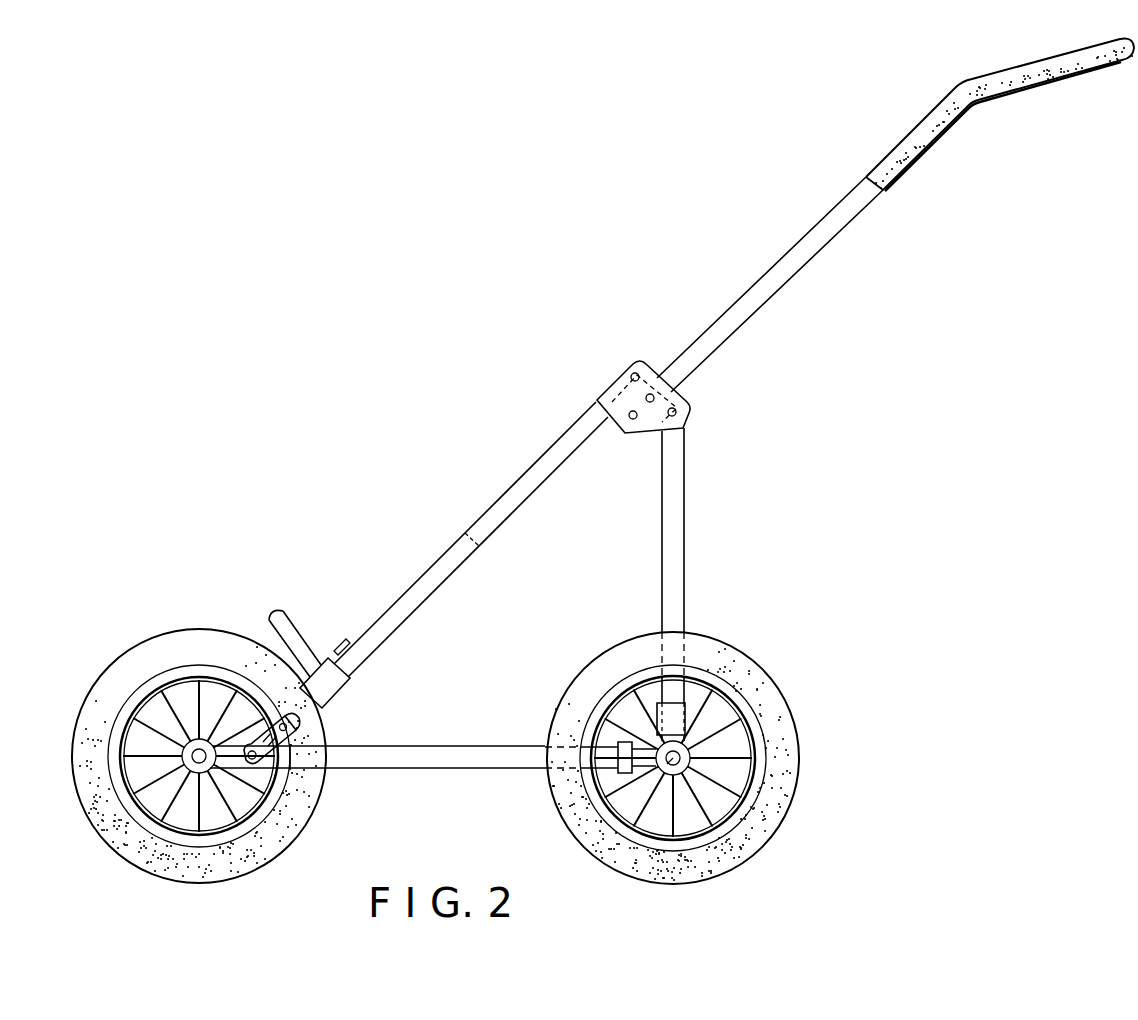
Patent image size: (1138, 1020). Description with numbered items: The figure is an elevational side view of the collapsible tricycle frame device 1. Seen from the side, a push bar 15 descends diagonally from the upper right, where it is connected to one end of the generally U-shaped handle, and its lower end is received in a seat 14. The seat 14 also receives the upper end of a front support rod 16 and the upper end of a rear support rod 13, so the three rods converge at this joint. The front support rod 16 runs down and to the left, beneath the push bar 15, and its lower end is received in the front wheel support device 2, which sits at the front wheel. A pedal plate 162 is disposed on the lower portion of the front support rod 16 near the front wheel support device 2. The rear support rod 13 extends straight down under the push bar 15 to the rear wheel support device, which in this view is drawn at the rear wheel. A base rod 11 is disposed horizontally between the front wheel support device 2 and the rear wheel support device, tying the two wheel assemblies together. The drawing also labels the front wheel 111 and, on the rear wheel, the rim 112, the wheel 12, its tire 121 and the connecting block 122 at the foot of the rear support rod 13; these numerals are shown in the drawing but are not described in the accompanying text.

The collapsible tricycle frame device 1 is at (567, 415).
The front wheel support device 2 is at (250, 738).
The base rod 11 is at (401, 770).
The front wheel 111 is at (318, 815).
The rear wheel rim 112 is at (632, 732).
The rear wheel 12 is at (666, 766).
The rear wheel tire 121 is at (787, 807).
The axle connecting block 122 is at (683, 723).
The rear support rod 13 is at (685, 527).
The seat 14 is at (692, 410).
The push bar 15 is at (786, 270).
The front support rod 16 is at (432, 560).
The pedal plate 162 is at (300, 640).